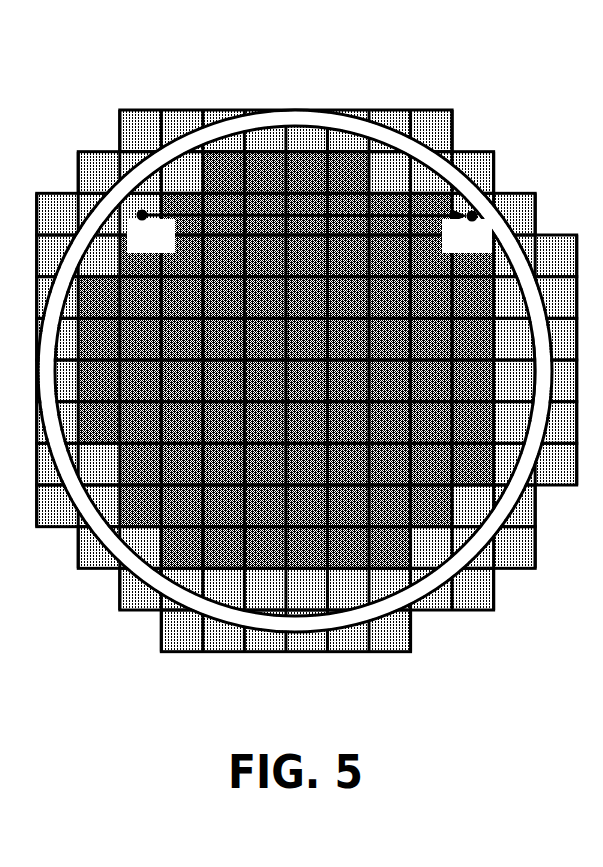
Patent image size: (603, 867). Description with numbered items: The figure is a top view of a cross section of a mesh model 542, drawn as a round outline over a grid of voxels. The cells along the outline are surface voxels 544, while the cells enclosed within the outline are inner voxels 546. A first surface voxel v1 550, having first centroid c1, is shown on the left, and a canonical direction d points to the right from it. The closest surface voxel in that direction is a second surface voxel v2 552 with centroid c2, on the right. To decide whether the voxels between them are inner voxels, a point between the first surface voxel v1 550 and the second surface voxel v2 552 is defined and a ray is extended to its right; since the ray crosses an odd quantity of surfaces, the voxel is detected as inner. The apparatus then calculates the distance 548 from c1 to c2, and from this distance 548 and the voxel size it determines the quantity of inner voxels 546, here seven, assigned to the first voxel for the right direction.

The mesh model 542 is at (181, 133).
The surface voxels 544 is at (445, 113).
The inner voxels 546 is at (220, 548).
The distance 548 is at (305, 197).
The first surface voxel v1 550 is at (130, 208).
The second surface voxel v2 552 is at (474, 207).